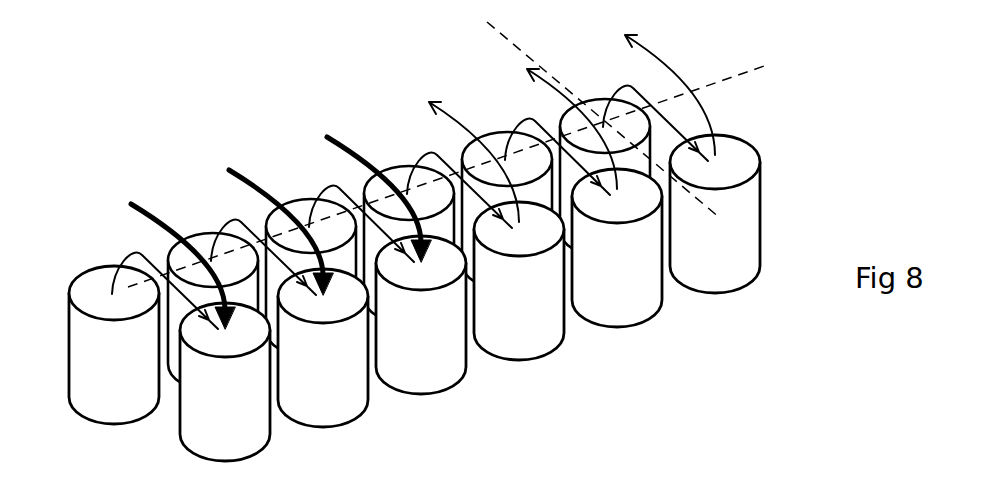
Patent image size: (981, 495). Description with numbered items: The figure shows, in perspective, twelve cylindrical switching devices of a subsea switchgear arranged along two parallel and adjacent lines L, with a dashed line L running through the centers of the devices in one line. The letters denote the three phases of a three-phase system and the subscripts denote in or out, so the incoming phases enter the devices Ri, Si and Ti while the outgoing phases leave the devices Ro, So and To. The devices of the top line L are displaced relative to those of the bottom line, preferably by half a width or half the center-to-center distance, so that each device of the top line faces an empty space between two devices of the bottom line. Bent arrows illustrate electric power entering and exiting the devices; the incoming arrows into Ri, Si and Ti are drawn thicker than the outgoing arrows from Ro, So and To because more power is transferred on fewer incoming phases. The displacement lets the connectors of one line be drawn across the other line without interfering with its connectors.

The R-phase out switching device Ro is at (316, 313).
The R-phase in switching device Ri is at (225, 382).
The S-phase in switching device Si is at (323, 348).
The T-phase in switching device Ti is at (421, 315).
The S-phase out switching device So is at (617, 248).
The T-phase out switching device To is at (715, 214).
The line L is at (460, 154).